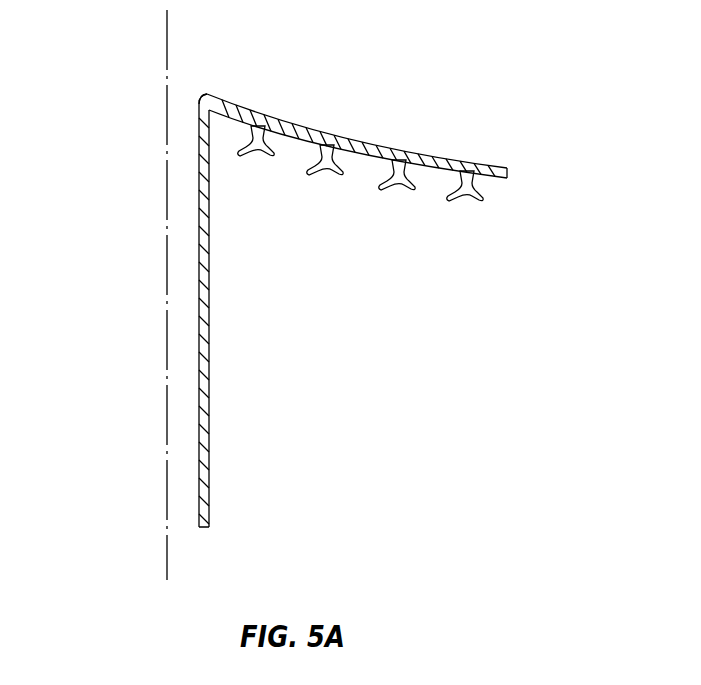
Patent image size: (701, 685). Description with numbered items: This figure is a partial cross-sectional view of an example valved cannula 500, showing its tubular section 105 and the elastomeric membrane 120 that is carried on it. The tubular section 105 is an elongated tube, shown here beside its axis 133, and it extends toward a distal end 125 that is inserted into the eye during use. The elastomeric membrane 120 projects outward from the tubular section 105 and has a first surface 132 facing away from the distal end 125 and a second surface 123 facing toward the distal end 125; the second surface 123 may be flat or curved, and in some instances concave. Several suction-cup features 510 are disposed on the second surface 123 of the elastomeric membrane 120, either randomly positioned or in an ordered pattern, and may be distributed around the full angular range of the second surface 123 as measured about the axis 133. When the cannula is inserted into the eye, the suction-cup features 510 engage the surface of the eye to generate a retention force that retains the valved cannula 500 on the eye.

The axis 133 is at (167, 40).
The tubular section 105 is at (222, 93).
The first surface 132 is at (360, 142).
The elastomeric membrane 120 is at (438, 158).
The second surface 123 is at (290, 137).
The suction-cup features 510 is at (338, 176).
The valved cannula 500 is at (352, 417).
The distal end 125 is at (209, 497).